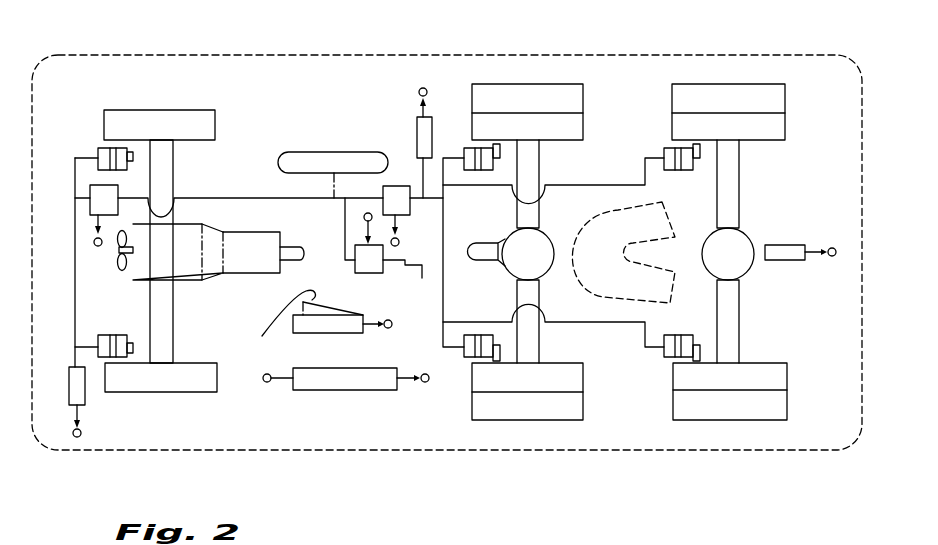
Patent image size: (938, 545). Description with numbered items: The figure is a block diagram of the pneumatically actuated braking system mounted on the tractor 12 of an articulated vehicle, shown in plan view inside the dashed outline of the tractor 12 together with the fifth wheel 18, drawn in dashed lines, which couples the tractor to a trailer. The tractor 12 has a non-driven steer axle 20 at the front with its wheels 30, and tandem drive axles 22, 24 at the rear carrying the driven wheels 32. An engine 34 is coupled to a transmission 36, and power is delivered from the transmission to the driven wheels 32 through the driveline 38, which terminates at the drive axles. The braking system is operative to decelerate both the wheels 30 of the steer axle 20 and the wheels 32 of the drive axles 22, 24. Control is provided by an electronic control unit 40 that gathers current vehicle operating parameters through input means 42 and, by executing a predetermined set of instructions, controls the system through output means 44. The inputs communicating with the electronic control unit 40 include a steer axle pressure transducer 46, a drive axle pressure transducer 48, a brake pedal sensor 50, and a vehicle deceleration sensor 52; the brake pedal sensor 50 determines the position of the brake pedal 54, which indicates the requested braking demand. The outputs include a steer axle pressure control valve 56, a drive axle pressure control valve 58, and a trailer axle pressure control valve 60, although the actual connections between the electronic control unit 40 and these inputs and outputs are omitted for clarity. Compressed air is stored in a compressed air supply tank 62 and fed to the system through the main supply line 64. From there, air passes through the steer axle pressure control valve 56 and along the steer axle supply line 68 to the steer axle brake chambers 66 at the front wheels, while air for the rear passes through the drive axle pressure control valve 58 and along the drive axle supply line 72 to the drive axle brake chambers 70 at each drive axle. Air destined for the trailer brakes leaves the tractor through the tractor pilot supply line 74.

The tractor 12 is at (792, 458).
The fifth wheel 18 is at (603, 297).
The steer axle 20 is at (213, 104).
The tandem drive axle 22 is at (503, 76).
The tandem drive axle 24 is at (701, 76).
The wheels 30 is at (130, 110).
The wheels 32 is at (548, 84).
The engine 34 is at (188, 273).
The transmission 36 is at (253, 268).
The driveline 38 is at (295, 246).
The electronic control unit 40 is at (345, 386).
The input means 42 is at (285, 382).
The output means 44 is at (405, 382).
The steer axle pressure transducer 46 is at (85, 394).
The drive axle pressure transducer 48 is at (417, 127).
The brake pedal sensor 50 is at (310, 335).
The vehicle deceleration sensor 52 is at (785, 262).
The brake pedal 54 is at (300, 328).
The steer axle pressure control valve 56 is at (117, 188).
The drive axle pressure control valve 58 is at (386, 197).
The trailer axle pressure control valve 60 is at (372, 274).
The compressed air supply tank 62 is at (310, 152).
The main supply line 64 is at (219, 198).
The steer axle brake chambers 66 is at (75, 158).
The steer axle supply line 68 is at (98, 150).
The drive axle brake chambers 70 is at (683, 143).
The drive axle supply line 72 is at (443, 205).
The tractor pilot supply line 74 is at (422, 279).